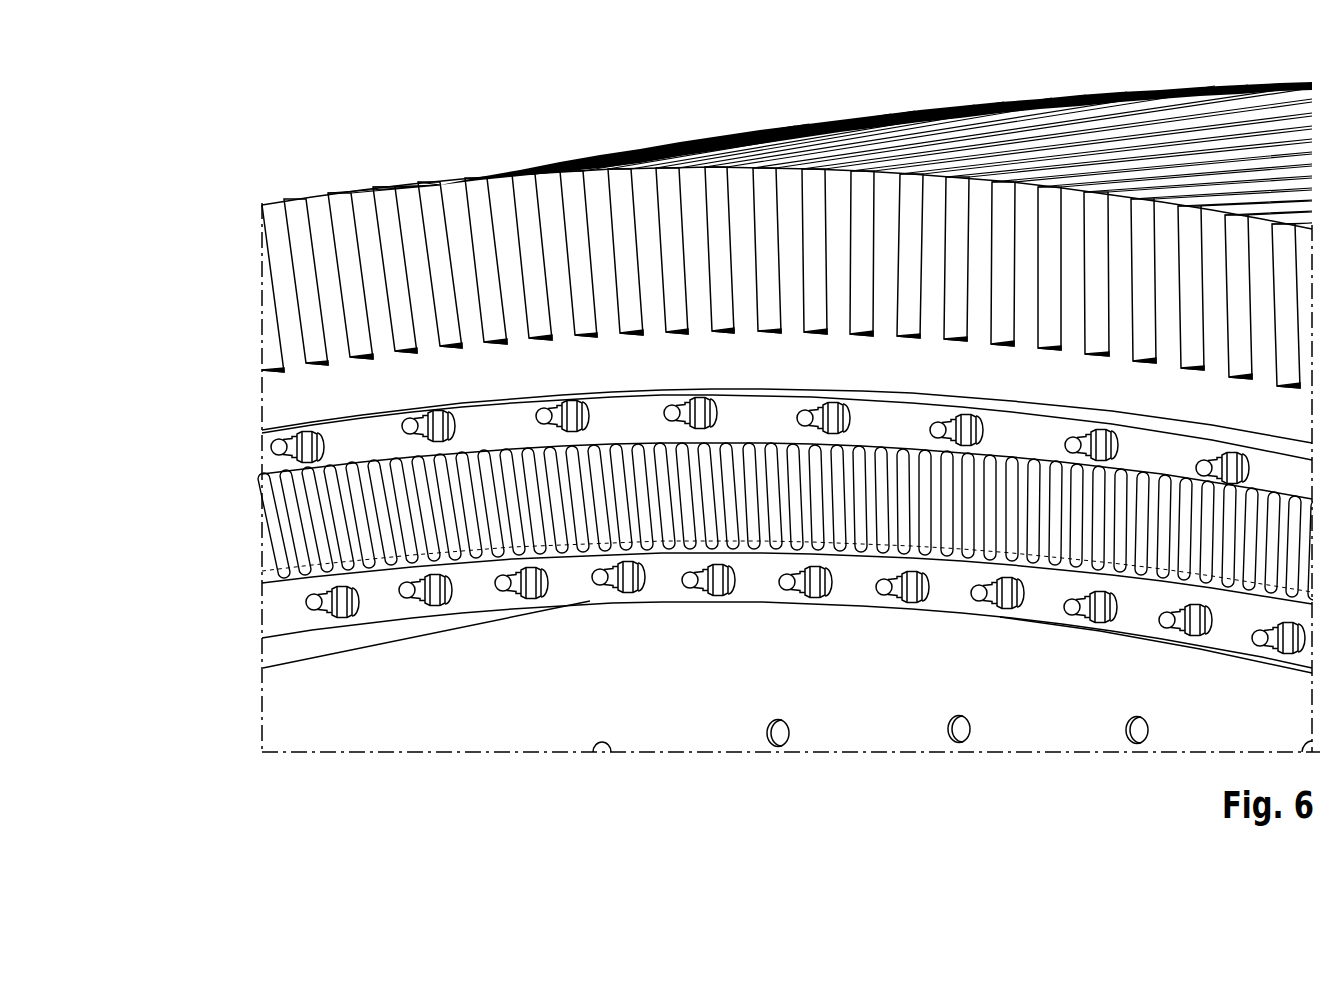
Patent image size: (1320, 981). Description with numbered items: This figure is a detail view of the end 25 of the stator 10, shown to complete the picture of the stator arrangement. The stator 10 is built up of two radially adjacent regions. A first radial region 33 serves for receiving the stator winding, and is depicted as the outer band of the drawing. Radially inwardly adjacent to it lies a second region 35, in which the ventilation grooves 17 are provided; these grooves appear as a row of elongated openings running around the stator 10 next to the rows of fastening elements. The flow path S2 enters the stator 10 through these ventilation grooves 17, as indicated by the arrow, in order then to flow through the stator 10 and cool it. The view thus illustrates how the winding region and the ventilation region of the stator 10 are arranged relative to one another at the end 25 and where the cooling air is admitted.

The stator 10 is at (258, 98).
The end of the stator 25 is at (430, 153).
The first radial region 33 is at (248, 207).
The second region 35 is at (250, 430).
The ventilation grooves 17 is at (303, 560).
The flow path S2 is at (628, 522).